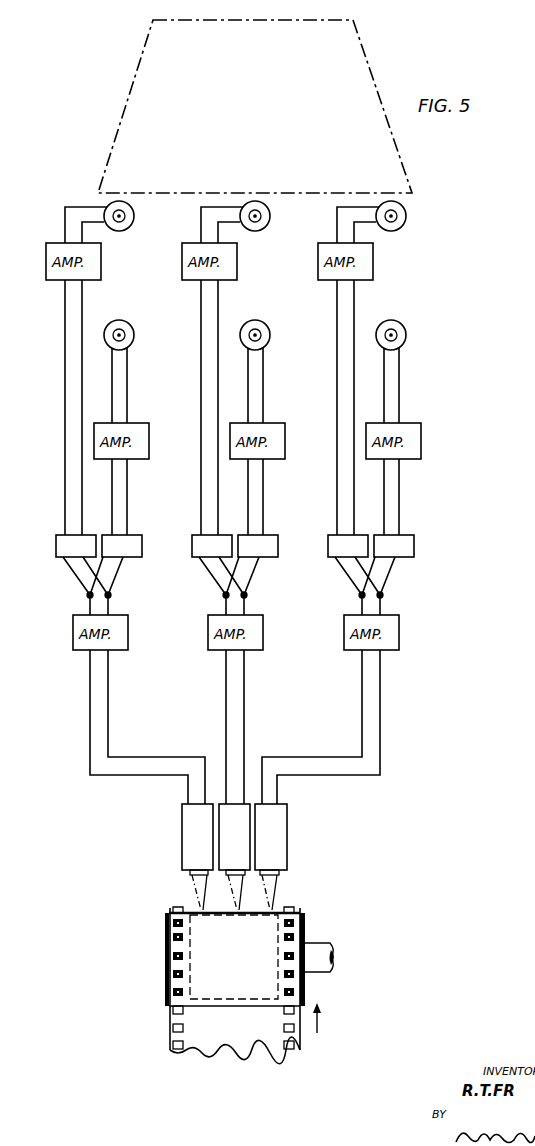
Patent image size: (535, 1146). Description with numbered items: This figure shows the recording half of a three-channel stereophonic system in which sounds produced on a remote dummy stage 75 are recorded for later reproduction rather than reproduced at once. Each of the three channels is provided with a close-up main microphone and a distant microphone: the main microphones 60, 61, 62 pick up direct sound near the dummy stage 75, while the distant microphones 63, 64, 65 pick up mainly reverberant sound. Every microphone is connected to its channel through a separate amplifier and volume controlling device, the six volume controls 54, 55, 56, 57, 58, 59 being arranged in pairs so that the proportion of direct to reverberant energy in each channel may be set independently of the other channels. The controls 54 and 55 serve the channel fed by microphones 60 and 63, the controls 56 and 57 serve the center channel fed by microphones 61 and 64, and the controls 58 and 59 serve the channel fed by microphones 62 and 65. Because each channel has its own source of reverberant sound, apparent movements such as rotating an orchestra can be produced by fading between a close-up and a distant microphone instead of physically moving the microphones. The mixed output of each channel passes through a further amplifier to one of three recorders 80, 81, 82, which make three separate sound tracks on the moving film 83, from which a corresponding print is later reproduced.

The dummy stage 75 is at (255, 106).
The main microphone 60 is at (134, 216).
The main microphone 61 is at (270, 216).
The main microphone 62 is at (406, 216).
The distant microphone 63 is at (134, 335).
The distant microphone 64 is at (270, 335).
The distant microphone 65 is at (406, 335).
The volume control 54 is at (56, 538).
The volume control 55 is at (150, 530).
The volume control 56 is at (192, 538).
The volume control 57 is at (284, 530).
The volume control 58 is at (328, 538).
The volume control 59 is at (414, 538).
The recorder 80 is at (182, 842).
The recorder 81 is at (234, 857).
The recorder 82 is at (287, 842).
The moving film 83 is at (170, 1032).